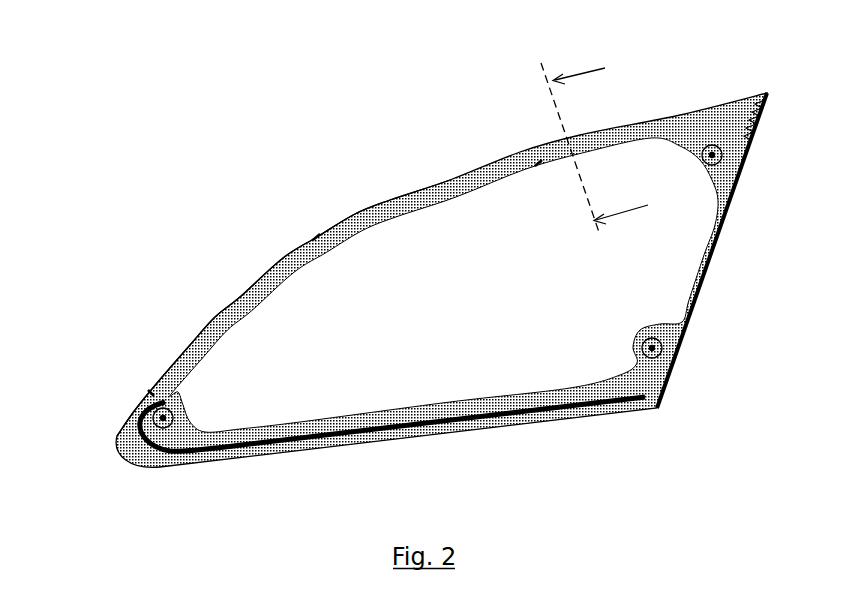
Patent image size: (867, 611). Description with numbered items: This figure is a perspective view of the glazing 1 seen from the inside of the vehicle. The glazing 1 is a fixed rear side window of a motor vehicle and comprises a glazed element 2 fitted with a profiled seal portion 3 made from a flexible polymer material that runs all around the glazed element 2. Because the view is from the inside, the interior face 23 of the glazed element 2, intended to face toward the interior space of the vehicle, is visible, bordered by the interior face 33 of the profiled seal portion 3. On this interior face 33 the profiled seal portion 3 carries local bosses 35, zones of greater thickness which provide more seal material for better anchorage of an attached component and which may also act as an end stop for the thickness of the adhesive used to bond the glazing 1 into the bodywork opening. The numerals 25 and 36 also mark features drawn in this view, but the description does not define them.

The glazing 1 is at (346, 91).
The glazed element 2 is at (450, 312).
The profiled seal portion 3 is at (257, 297).
The interior face 23 is at (680, 223).
The fastening element 25 is at (153, 430).
The interior face 33 is at (720, 198).
The local boss 35 is at (538, 162).
The outer edge of frame 36 is at (283, 258).